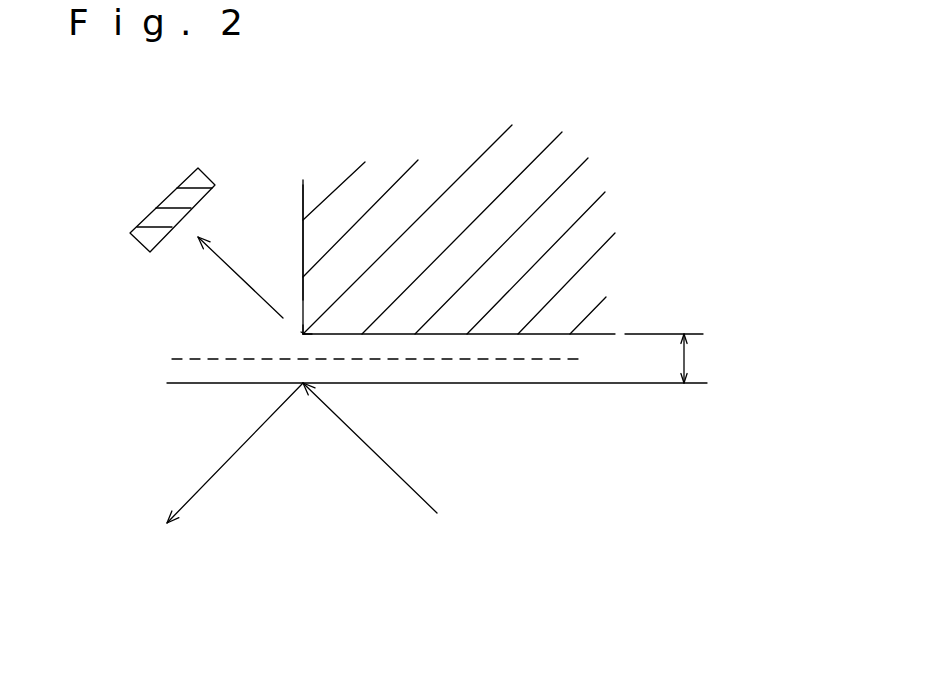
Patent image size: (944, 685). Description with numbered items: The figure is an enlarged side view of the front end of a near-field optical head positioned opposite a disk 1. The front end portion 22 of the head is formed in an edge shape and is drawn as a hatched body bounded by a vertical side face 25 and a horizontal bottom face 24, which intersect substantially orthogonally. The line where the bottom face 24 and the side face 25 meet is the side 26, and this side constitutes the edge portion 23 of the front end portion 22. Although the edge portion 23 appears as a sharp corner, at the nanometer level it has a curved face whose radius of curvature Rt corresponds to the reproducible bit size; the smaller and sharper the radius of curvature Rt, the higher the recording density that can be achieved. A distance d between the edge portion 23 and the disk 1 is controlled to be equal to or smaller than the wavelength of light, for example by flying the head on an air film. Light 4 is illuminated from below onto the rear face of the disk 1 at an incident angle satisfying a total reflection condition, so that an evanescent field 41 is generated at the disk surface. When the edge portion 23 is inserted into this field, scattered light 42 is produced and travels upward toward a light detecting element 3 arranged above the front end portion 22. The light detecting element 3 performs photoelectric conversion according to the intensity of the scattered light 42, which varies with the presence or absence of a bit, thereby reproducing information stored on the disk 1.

The disk 1 is at (605, 398).
The light detecting element 3 is at (160, 208).
The light 4 is at (395, 475).
The front end portion 22 is at (322, 187).
The edge portion 23 is at (303, 334).
The bottom face 24 is at (503, 334).
The side face 25 is at (303, 217).
The side 26 is at (297, 339).
The evanescent field 41 is at (185, 363).
The scattered light 42 is at (237, 277).
The radius of curvature Rt is at (305, 332).
The distance d is at (669, 358).